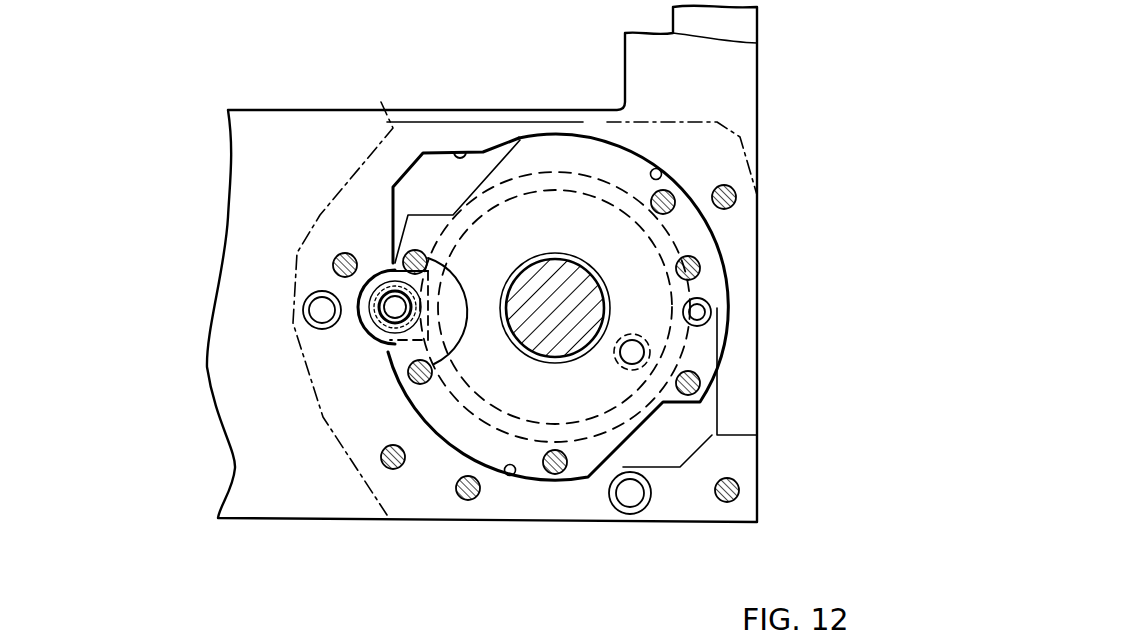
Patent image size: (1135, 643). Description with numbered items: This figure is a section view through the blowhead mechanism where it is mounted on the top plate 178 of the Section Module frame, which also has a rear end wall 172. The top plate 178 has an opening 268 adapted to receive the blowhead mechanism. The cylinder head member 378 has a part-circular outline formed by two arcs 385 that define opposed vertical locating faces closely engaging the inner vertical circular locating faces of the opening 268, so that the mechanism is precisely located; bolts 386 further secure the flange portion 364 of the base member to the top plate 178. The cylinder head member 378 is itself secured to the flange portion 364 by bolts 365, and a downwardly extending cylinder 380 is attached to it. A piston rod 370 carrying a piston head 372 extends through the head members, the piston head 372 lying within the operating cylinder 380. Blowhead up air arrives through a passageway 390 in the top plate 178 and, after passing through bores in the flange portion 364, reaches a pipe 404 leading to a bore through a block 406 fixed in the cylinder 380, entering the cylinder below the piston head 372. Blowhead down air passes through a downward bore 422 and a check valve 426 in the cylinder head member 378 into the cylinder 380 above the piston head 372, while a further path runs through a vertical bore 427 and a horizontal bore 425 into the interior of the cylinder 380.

The rear end wall 172 is at (743, 25).
The top plate 178 is at (325, 485).
The opening 268 is at (462, 152).
The flange portion 364 is at (381, 102).
The bolts 365 is at (431, 362).
The piston rod 370 is at (548, 340).
The piston head 372 is at (618, 210).
The cylinder head member 378 is at (537, 470).
The cylinder 380 is at (577, 173).
The arcs 385 is at (663, 173).
The bolts 386 is at (343, 254).
The passageway 390 is at (318, 318).
The pipe 404 is at (380, 333).
The block 406 is at (363, 323).
The downward bore 422 is at (640, 361).
The horizontal bore 425 is at (650, 350).
The check valve 426 is at (652, 376).
The vertical bore 427 is at (672, 340).